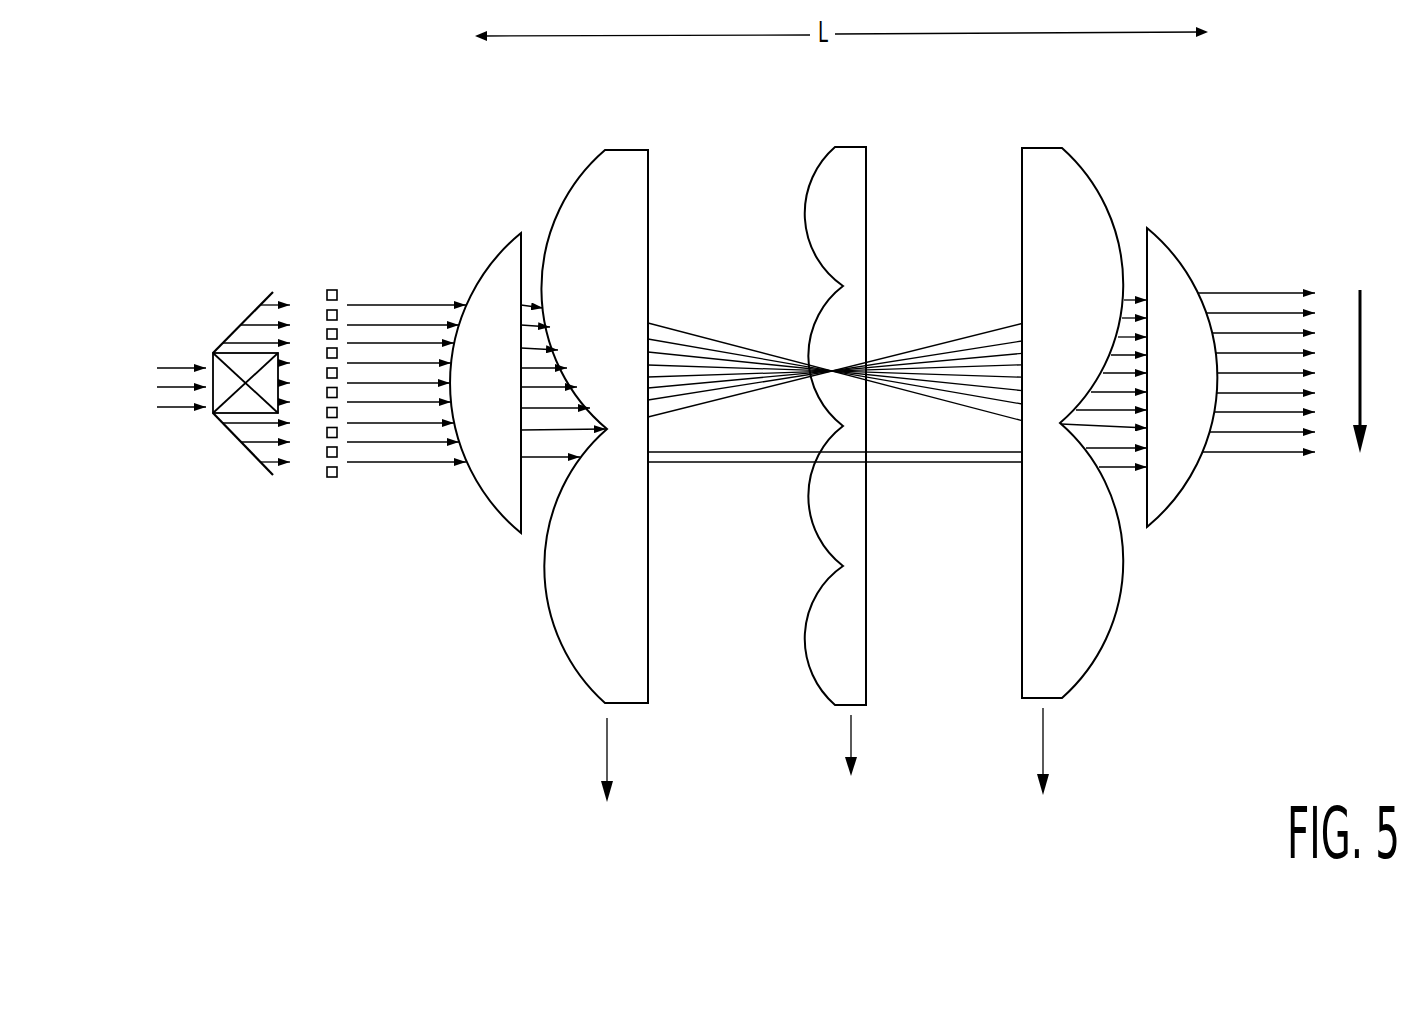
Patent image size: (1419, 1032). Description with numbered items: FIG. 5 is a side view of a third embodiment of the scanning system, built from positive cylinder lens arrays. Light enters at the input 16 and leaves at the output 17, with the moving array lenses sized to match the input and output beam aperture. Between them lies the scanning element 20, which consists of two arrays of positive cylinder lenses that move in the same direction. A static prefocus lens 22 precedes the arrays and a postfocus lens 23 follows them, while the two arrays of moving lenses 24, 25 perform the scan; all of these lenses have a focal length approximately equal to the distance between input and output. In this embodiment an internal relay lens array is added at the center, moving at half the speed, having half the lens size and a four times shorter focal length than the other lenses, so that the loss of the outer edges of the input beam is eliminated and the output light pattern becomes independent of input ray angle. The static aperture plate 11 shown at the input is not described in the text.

The static aperture plate 11 is at (409, 302).
The input 16 is at (140, 282).
The output 17 is at (1373, 280).
The scanning element 20 is at (1062, 112).
The static prefocus lens 22 is at (497, 513).
The postfocus lens 23 is at (1158, 517).
The array of moving lenses 24 is at (646, 607).
The array of moving lenses 25 is at (811, 668).